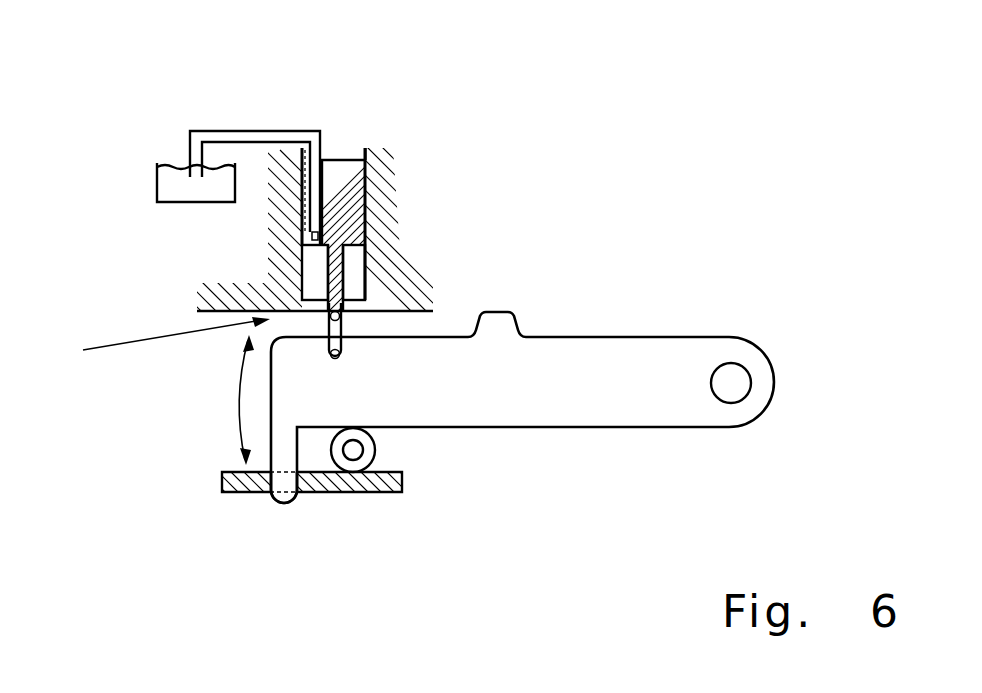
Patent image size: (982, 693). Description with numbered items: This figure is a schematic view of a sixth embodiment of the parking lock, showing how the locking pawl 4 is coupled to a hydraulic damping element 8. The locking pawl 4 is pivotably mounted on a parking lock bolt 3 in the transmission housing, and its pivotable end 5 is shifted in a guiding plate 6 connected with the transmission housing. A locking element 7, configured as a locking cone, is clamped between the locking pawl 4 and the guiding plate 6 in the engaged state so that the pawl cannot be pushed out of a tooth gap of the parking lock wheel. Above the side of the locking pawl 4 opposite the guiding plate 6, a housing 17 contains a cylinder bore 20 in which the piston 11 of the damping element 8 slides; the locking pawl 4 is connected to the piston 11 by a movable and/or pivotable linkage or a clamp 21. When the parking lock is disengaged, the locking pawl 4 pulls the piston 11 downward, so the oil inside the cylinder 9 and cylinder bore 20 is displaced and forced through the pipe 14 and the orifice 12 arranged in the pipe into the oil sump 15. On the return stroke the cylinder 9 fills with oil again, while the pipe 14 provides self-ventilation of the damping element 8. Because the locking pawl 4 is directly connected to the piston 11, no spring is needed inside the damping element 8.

The parking lock bolt 3 is at (733, 395).
The locking pawl 4 is at (627, 355).
The pivotable end 5 is at (280, 502).
The guiding plate 6 is at (317, 492).
The locking element 7 is at (368, 455).
The hydraulic damping element 8 is at (161, 344).
The cylinder 9 is at (393, 300).
The piston 11 is at (350, 160).
The orifice 12 is at (300, 235).
The pipe 14 is at (227, 130).
The oil sump 15 is at (178, 187).
The housing 17 is at (403, 290).
The cylinder bore 20 is at (366, 270).
The clamp 21 is at (338, 348).